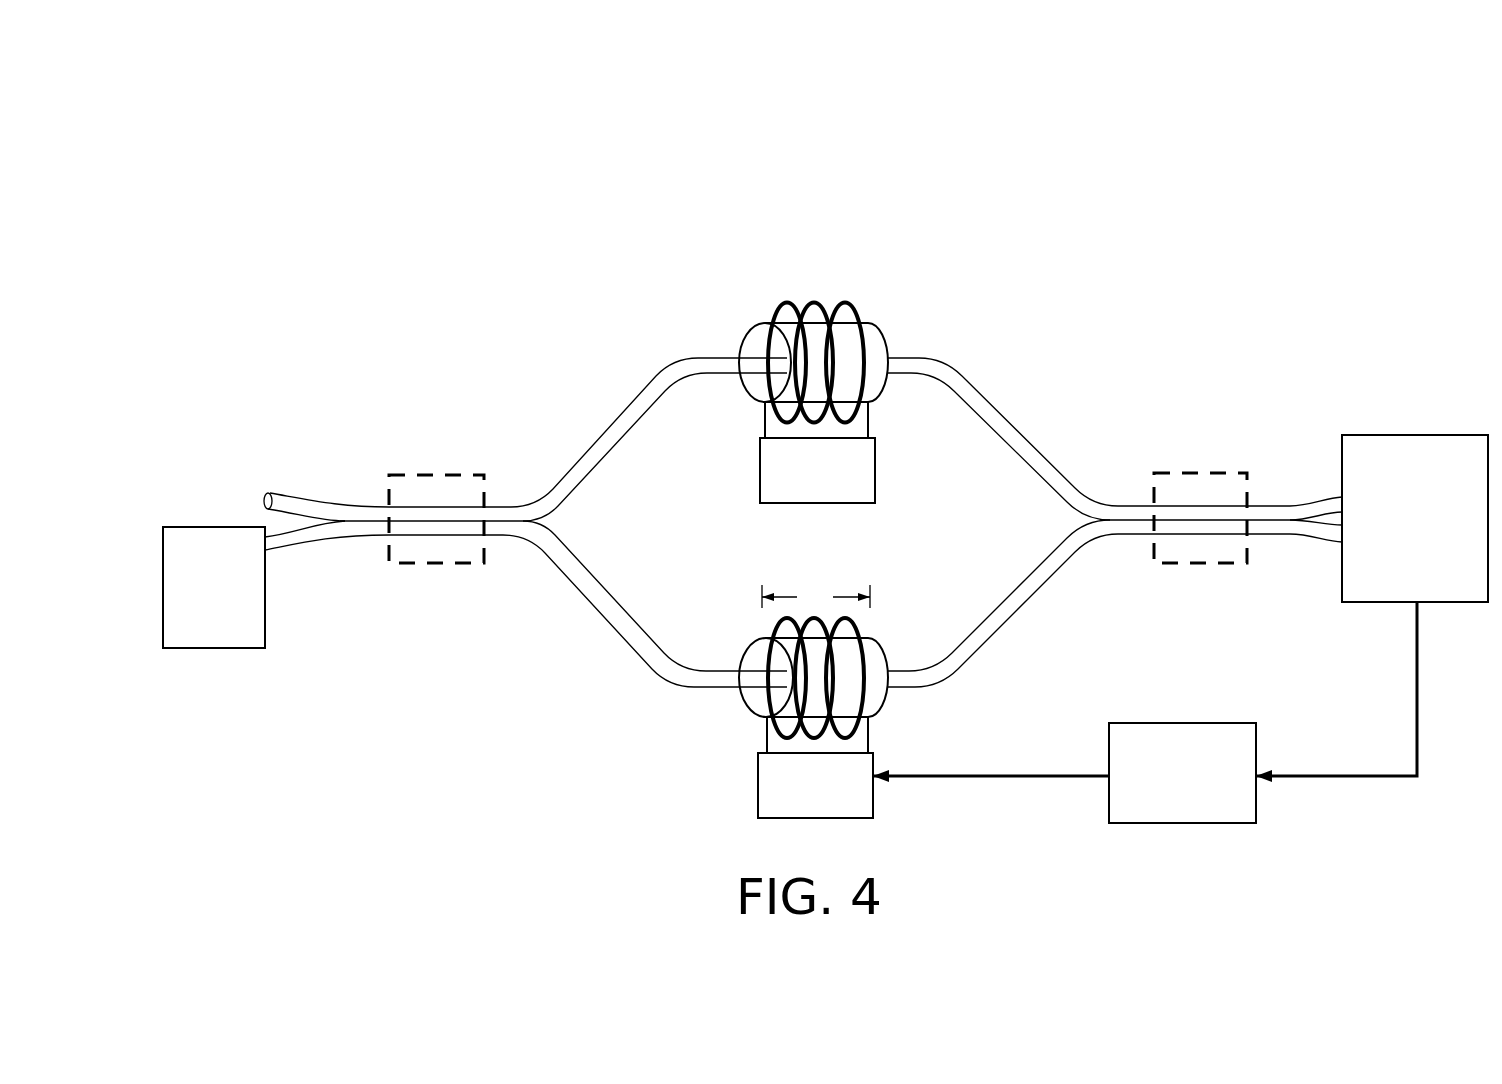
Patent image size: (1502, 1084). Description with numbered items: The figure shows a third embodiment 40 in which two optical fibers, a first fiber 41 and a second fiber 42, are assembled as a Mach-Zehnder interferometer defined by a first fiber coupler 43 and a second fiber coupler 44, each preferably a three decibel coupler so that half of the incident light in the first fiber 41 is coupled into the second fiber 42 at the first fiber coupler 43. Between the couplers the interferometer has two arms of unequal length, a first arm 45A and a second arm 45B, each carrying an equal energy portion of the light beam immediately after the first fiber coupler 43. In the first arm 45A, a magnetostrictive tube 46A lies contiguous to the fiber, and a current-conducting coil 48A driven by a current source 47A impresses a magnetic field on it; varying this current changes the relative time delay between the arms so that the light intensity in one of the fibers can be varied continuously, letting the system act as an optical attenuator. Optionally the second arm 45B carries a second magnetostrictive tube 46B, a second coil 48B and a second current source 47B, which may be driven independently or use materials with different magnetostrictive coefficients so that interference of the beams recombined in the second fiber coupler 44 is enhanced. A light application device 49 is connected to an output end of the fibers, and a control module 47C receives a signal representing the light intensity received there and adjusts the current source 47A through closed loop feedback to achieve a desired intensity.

The third embodiment 40 is at (1117, 167).
The first fiber 41 is at (283, 548).
The second fiber 42 is at (298, 497).
The first fiber coupler 43 is at (437, 550).
The second fiber coupler 44 is at (1198, 548).
The first arm 45A is at (695, 693).
The second arm 45B is at (1027, 402).
The magnetostrictive tube 46A is at (757, 655).
The second magnetostrictive tube 46B is at (753, 347).
The current source 47A is at (865, 795).
The second current source 47B is at (863, 480).
The control module 47C is at (1232, 813).
The current-conducting coil 48A is at (765, 735).
The second current-conducting coil 48B is at (765, 405).
The light application device 49 is at (1412, 450).